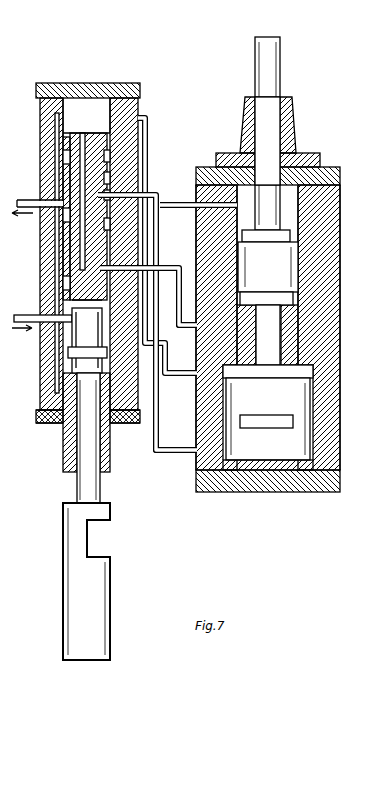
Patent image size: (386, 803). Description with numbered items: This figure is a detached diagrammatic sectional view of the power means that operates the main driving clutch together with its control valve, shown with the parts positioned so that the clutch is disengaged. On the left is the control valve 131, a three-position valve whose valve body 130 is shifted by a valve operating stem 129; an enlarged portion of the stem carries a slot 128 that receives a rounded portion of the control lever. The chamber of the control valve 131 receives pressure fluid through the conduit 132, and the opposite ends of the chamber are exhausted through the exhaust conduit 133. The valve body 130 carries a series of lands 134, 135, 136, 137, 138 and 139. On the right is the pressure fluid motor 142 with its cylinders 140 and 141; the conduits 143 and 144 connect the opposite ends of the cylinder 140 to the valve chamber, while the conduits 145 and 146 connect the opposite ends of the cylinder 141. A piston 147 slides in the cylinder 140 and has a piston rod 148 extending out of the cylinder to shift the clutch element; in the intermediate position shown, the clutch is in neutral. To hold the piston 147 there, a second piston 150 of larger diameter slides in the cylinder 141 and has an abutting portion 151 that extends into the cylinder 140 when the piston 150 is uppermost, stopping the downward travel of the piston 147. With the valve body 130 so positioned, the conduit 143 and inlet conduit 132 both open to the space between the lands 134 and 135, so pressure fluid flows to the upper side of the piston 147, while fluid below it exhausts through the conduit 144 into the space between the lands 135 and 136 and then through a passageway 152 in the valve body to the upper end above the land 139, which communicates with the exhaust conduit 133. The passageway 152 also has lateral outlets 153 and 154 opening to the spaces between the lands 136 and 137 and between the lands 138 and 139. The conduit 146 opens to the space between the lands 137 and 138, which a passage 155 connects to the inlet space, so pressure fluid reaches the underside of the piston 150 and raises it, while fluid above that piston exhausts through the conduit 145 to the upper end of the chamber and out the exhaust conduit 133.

The slot 128 is at (98, 553).
The valve operating stem 129 is at (78, 489).
The valve body 130 is at (80, 332).
The control valve 131 is at (139, 97).
The conduit 132 is at (30, 314).
The exhaust conduit 133 is at (33, 199).
The land 134 is at (70, 353).
The land 135 is at (67, 281).
The land 136 is at (108, 227).
The land 137 is at (112, 196).
The land 138 is at (110, 181).
The land 139 is at (108, 156).
The cylinder 140 is at (296, 213).
The cylinder 141 is at (303, 433).
The pressure fluid motor 142 is at (330, 167).
The conduit 143 is at (180, 203).
The conduit 144 is at (190, 328).
The conduit 145 is at (182, 374).
The conduit 146 is at (177, 453).
The piston 147 is at (290, 264).
The piston rod 148 is at (272, 75).
The second piston 150 is at (303, 393).
The abutting portion 151 is at (270, 320).
The passageway 152 is at (83, 178).
The lateral outlet 153 is at (72, 216).
The lateral outlet 154 is at (73, 168).
The passage 155 is at (97, 251).